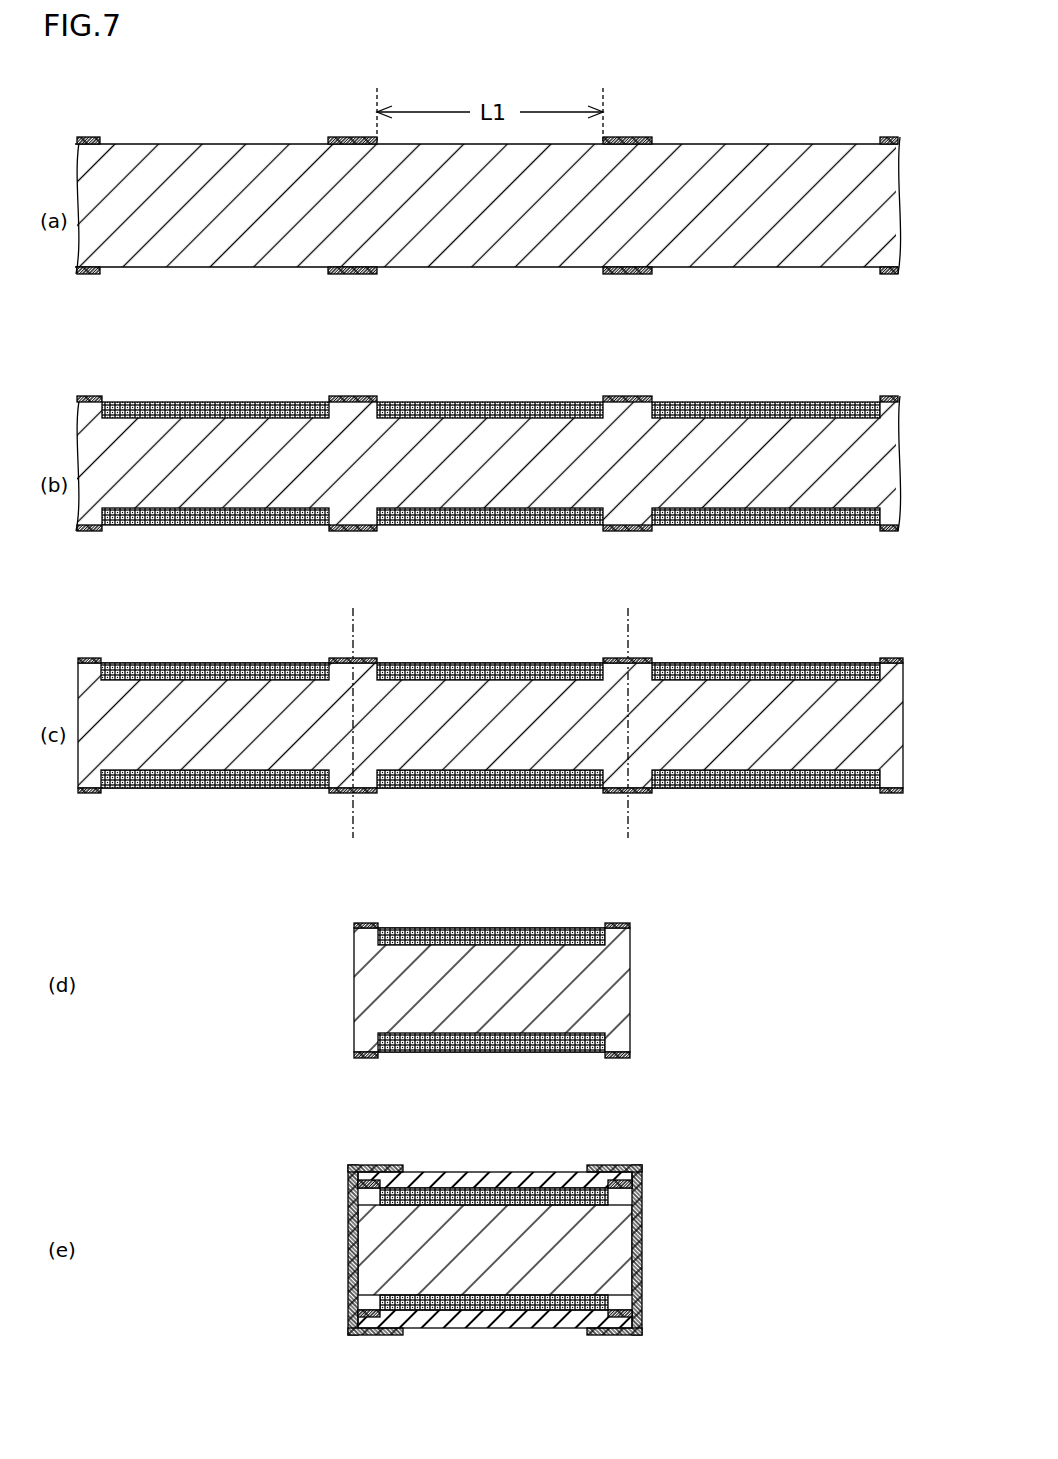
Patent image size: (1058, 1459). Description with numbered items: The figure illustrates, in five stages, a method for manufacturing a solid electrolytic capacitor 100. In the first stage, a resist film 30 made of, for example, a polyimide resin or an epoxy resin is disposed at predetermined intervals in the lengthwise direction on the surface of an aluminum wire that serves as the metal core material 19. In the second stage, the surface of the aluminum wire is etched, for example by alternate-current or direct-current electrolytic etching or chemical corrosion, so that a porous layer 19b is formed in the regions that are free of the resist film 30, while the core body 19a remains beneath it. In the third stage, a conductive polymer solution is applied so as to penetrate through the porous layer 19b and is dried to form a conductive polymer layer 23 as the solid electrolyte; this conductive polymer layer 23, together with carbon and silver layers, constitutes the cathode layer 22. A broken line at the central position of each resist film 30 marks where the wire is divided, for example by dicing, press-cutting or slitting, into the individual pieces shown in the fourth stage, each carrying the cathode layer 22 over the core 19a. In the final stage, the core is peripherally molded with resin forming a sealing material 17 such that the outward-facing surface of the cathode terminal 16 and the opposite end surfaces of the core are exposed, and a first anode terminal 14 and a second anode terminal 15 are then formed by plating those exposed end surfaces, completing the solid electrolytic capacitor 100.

The metal core material 19 is at (748, 144).
The metal core material body 19a is at (763, 428).
The porous layer 19b is at (485, 402).
The resist film 30 is at (346, 137).
The conductive polymer layer 23 is at (500, 663).
The cathode layer 22 is at (488, 1052).
The first anode terminal 14 is at (348, 1245).
The second anode terminal 15 is at (642, 1228).
The cathode terminal 16 is at (482, 1328).
The sealing material 17 is at (575, 1328).
The solid electrolytic capacitor 100 is at (464, 1150).